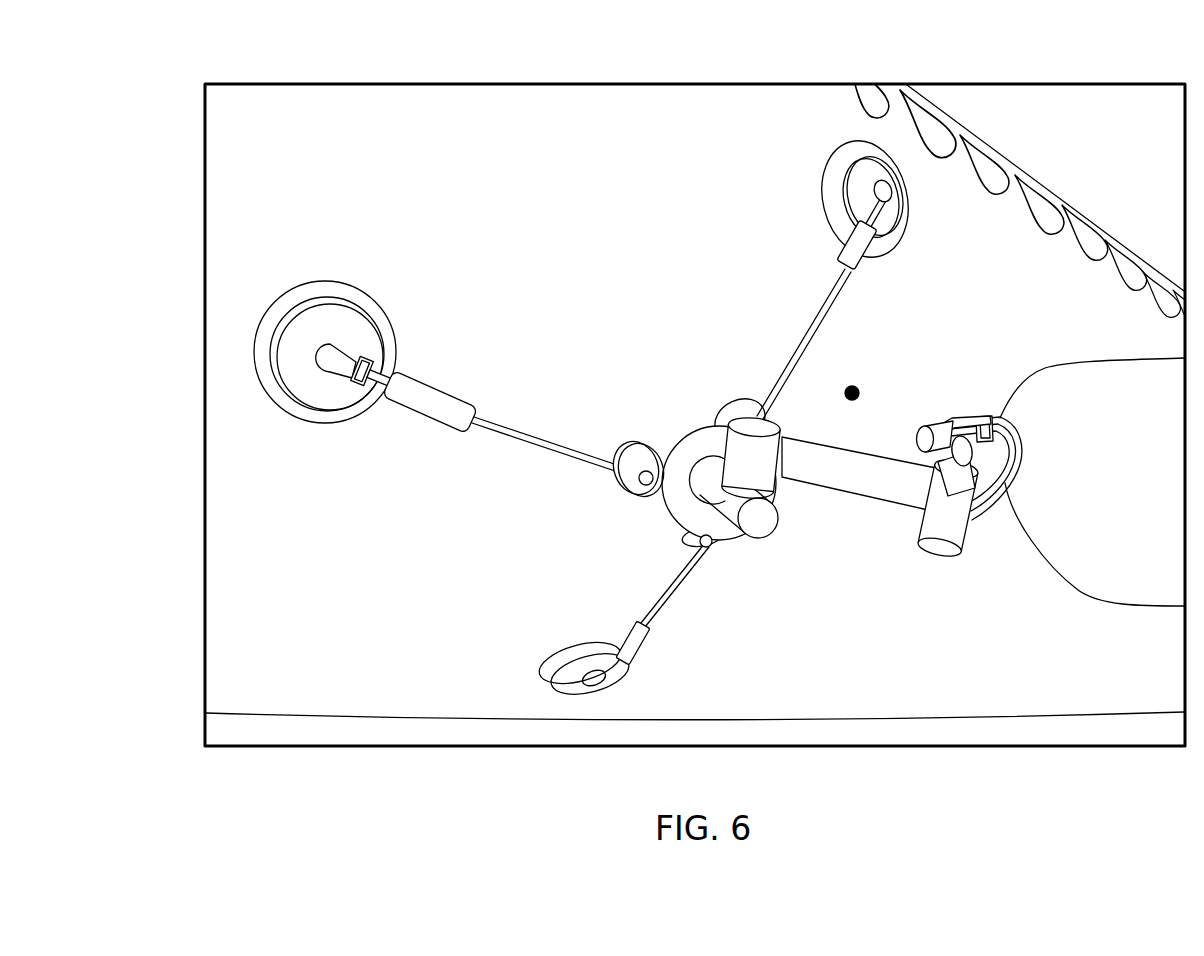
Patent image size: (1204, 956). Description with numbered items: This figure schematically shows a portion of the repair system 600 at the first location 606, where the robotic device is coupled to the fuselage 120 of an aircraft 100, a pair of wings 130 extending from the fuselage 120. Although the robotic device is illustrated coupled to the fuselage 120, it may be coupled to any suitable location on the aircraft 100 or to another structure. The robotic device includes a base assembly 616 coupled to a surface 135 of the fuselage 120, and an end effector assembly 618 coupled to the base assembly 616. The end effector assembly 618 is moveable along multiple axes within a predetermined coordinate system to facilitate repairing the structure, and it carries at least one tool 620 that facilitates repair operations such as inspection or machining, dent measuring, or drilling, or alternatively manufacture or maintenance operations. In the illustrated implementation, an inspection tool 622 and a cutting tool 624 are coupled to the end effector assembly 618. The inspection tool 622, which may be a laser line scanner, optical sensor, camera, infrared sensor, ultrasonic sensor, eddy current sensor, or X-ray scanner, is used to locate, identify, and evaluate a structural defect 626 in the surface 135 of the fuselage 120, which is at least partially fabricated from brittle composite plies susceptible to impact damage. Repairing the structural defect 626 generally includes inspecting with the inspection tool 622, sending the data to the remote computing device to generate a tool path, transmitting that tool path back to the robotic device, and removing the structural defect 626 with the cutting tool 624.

The aircraft 100 is at (1078, 149).
The fuselage 120 is at (589, 176).
The wing 130 is at (1143, 487).
The surface 135 is at (763, 301).
The system 600 is at (477, 242).
The first location 606 is at (735, 83).
The base assembly 616 is at (664, 513).
The end effector assembly 618 is at (861, 497).
The tool 620 is at (975, 570).
The inspection tool 622 is at (944, 423).
The cutting tool 624 is at (978, 440).
The structural defect 626 is at (858, 373).